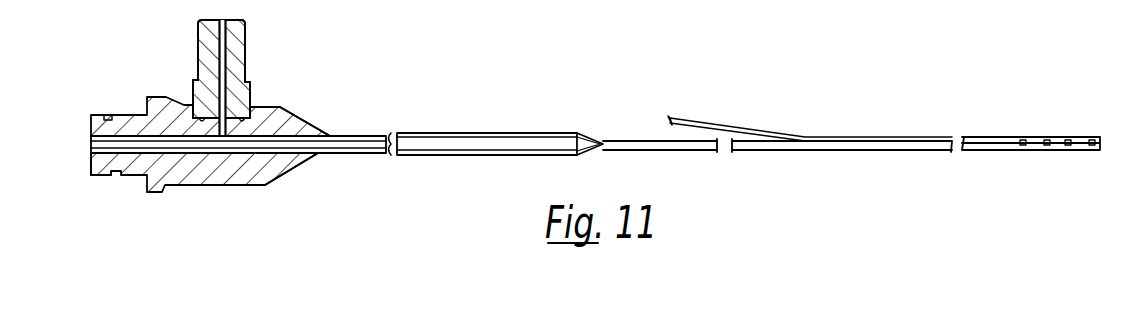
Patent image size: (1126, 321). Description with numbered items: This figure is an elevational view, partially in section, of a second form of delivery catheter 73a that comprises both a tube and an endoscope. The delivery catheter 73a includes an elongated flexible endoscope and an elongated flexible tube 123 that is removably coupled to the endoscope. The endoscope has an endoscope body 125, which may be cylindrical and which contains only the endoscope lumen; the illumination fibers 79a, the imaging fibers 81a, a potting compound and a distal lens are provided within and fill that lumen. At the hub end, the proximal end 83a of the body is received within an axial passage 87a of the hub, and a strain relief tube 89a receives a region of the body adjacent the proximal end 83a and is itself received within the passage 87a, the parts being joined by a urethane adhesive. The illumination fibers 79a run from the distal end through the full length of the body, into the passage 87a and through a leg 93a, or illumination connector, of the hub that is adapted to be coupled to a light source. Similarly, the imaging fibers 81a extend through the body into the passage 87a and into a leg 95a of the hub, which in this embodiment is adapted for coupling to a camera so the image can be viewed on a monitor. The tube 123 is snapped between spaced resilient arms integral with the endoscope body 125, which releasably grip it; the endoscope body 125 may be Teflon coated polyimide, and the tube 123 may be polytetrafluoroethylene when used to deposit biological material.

The delivery catheter 73a is at (455, 108).
The illumination fibers 79a is at (247, 82).
The imaging fibers 81a is at (137, 172).
The proximal end 83a is at (250, 188).
The axial passage 87a is at (313, 158).
The strain relief tube 89a is at (497, 147).
The leg 93a is at (243, 62).
The leg 95a is at (110, 118).
The elongated flexible tube 123 is at (728, 128).
The endoscope body 125 is at (643, 141).